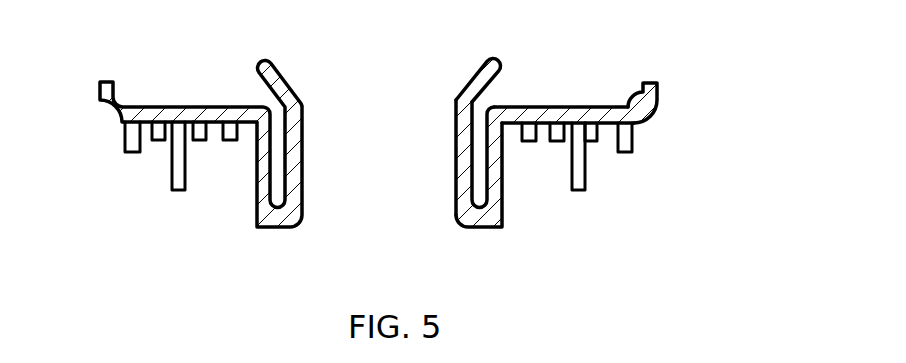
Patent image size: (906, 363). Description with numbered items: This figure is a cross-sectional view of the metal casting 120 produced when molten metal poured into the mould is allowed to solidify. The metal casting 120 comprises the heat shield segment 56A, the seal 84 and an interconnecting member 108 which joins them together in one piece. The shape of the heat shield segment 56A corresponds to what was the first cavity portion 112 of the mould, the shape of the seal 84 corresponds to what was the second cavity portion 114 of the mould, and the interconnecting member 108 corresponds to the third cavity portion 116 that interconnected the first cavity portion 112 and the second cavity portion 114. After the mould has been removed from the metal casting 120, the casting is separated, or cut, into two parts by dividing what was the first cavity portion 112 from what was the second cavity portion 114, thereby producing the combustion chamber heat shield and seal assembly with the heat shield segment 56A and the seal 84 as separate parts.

The interconnecting member 108 is at (263, 187).
The seal 84 is at (455, 123).
The second cavity portion 114 is at (490, 62).
The third cavity portion 116 is at (498, 195).
The metal casting 120 is at (583, 105).
The heat shield segment 56A is at (601, 117).
The first cavity portion 112 is at (660, 102).